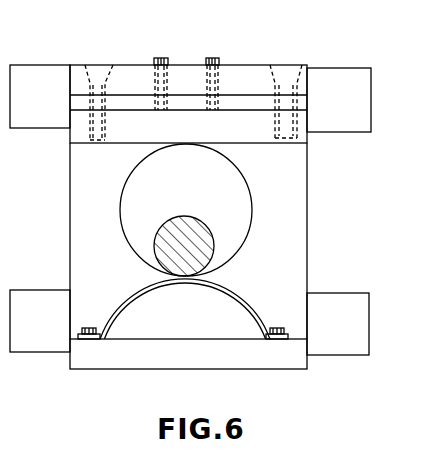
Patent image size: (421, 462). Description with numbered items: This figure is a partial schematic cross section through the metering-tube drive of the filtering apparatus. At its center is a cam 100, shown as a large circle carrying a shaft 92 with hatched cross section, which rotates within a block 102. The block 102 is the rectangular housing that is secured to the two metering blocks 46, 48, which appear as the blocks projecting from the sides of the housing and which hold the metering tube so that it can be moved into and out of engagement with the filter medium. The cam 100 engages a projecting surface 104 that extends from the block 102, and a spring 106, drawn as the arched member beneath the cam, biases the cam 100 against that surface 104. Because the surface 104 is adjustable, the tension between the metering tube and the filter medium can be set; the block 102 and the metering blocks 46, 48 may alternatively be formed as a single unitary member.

The metering block 46 is at (28, 305).
The metering block 48 is at (328, 87).
The shaft 92 is at (193, 255).
The cam 100 is at (135, 197).
The block 102 is at (288, 214).
The projecting surface 104 is at (77, 132).
The spring 106 is at (132, 290).